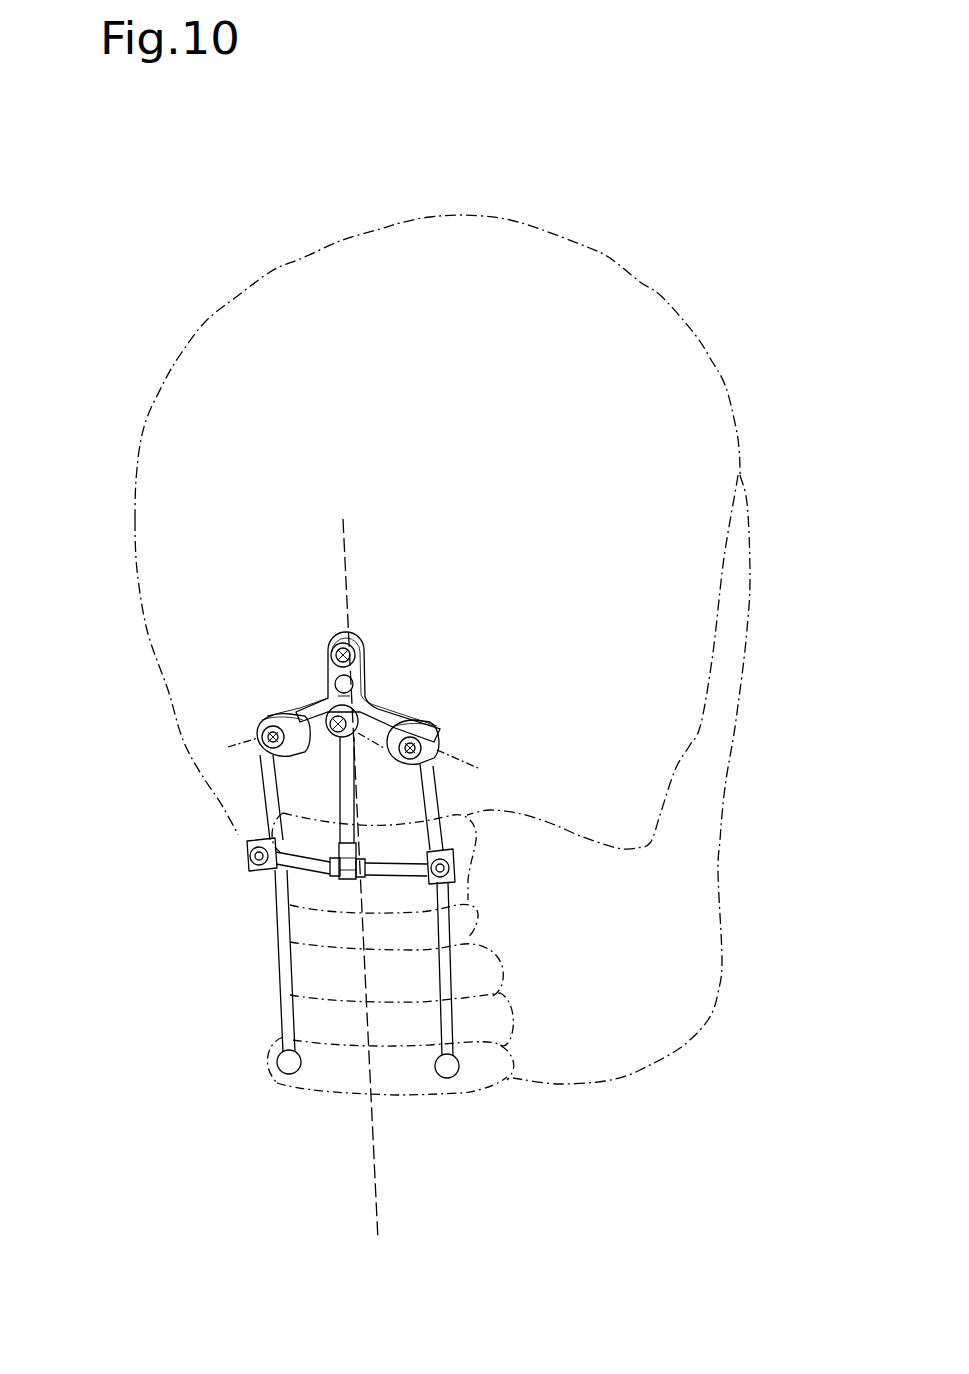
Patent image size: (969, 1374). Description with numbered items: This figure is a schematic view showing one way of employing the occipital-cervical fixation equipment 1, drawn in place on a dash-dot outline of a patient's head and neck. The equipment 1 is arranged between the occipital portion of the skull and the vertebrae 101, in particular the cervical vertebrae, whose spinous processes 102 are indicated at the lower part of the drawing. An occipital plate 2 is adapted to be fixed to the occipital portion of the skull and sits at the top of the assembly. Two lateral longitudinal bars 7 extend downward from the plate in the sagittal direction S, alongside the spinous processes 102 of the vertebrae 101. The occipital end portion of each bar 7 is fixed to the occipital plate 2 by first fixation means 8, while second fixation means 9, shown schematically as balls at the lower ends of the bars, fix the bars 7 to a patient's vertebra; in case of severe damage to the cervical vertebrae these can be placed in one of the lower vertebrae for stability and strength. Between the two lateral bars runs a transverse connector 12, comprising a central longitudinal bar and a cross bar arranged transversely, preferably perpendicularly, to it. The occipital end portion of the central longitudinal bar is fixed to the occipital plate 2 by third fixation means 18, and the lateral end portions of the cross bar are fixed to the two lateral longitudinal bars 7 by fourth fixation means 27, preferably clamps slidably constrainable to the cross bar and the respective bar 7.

The occipital-cervical fixation equipment 1 is at (429, 622).
The occipital plate 2 is at (255, 596).
The lateral longitudinal bars 7 is at (440, 793).
The first fixation means 8 is at (255, 729).
The second fixation means 9 is at (280, 1063).
The transverse connector 12 is at (331, 792).
The third fixation means 18 is at (323, 702).
The fourth fixation means 27 is at (254, 875).
The vertebrae 101 is at (484, 968).
The spinous processes 102 is at (347, 1083).
The sagittal direction S is at (342, 542).